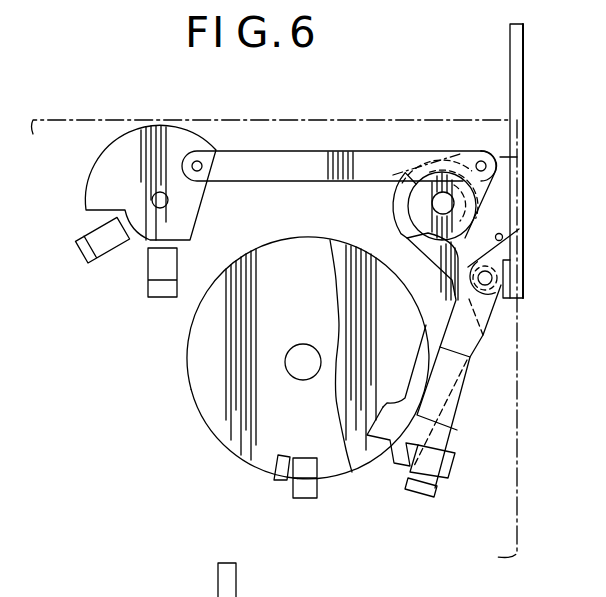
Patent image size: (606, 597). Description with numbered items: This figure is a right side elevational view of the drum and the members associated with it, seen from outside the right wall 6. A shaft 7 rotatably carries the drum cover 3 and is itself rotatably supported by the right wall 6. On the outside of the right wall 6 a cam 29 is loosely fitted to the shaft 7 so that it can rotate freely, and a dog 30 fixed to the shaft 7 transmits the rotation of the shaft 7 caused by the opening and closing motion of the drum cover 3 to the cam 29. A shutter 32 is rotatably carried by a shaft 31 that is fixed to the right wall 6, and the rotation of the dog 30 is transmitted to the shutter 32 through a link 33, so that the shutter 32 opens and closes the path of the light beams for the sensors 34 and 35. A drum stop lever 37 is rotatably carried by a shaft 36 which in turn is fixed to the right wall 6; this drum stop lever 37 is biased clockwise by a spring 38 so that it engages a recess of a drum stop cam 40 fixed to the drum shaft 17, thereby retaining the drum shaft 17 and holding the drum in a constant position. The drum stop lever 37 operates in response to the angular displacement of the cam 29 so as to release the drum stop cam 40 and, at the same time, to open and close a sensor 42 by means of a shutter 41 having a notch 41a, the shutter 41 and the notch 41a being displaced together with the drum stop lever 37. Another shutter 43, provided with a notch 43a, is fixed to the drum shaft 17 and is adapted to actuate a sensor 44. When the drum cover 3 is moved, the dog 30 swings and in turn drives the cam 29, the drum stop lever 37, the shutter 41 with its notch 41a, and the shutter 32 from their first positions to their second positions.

The drum cover 3 is at (522, 87).
The right wall 6 is at (397, 130).
The shaft 7 is at (452, 208).
The drum shaft 17 is at (288, 366).
The cam 29 is at (394, 213).
The dog 30 is at (490, 183).
The shaft 31 is at (169, 206).
The shutter 32 is at (156, 127).
The link 33 is at (321, 157).
The sensor 34 is at (148, 290).
The sensor 35 is at (82, 248).
The shaft 36 is at (500, 302).
The drum stop lever 37 is at (476, 344).
The spring 38 is at (500, 247).
The drum stop cam 40 is at (402, 318).
The shutter 41 is at (440, 432).
The notch 41a is at (398, 461).
The sensor 42 is at (436, 491).
The shutter 43 is at (245, 458).
The notch 43a is at (283, 472).
The sensor 44 is at (312, 499).